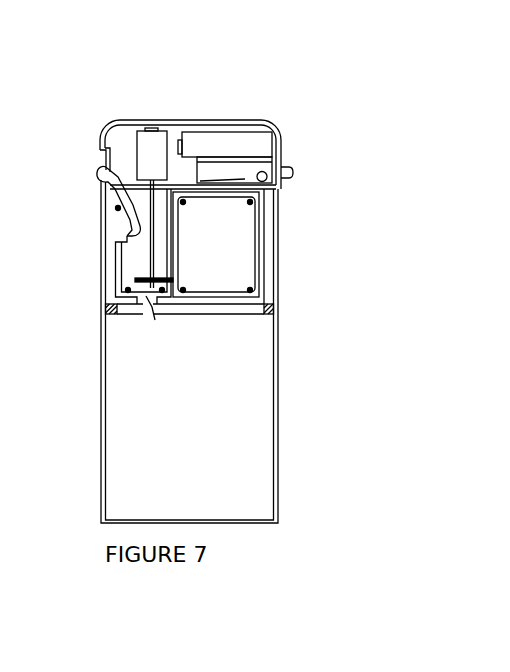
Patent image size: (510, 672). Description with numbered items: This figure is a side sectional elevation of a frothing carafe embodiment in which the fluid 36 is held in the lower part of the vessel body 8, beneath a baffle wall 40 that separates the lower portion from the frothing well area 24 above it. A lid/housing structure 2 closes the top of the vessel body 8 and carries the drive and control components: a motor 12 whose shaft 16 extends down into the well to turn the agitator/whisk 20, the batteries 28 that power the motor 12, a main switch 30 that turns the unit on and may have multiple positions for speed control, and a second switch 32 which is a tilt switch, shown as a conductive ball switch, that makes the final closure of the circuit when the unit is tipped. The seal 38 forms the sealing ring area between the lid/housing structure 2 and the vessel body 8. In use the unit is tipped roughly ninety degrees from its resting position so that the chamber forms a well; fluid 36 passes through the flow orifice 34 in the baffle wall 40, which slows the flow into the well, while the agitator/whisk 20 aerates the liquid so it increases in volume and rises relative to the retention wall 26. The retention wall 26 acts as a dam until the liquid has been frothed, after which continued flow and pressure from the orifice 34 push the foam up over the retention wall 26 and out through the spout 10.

The lid/housing structure 2 is at (113, 120).
The vessel body 8 is at (102, 430).
The spout 10 is at (105, 170).
The motor 12 is at (234, 268).
The shaft 16 is at (155, 217).
The agitator/whisk 20 is at (139, 278).
The frothing well area 24 is at (142, 263).
The retention wall 26 is at (129, 232).
The batteries 28 is at (192, 140).
The switch 1 30 is at (292, 172).
The switch 2 32 is at (248, 176).
The flow orifice 34 is at (152, 312).
The fluid 36 is at (253, 375).
The O-ring or seal 38 is at (268, 310).
The baffle wall 40 is at (250, 310).